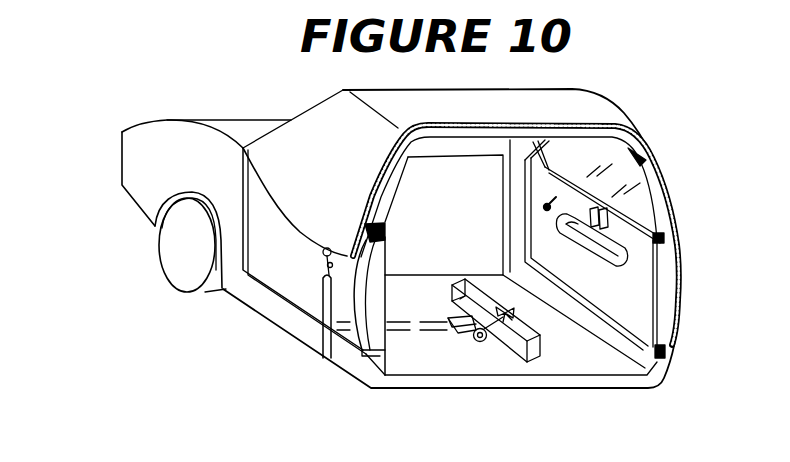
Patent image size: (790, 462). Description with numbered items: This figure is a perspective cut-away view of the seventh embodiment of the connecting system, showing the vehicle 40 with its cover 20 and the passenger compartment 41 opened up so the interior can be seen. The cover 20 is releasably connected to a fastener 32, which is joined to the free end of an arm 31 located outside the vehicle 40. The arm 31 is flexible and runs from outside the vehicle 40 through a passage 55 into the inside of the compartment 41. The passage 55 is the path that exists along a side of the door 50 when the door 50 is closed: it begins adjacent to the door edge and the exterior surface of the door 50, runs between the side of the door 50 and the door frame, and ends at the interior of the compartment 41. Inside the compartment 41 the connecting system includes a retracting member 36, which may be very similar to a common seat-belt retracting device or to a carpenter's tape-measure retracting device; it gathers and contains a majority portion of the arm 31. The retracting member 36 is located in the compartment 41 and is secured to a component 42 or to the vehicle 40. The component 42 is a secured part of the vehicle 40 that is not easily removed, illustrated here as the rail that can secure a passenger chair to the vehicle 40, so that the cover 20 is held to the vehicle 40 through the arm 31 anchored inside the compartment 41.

The cover 20 is at (322, 135).
The vehicle 40 is at (184, 172).
The compartment 41 is at (458, 204).
The door 50 is at (295, 263).
The passage 55 is at (250, 203).
The fastener 32 is at (322, 272).
The arm 31 is at (325, 307).
The retracting member 36 is at (478, 342).
The component 42 is at (510, 333).